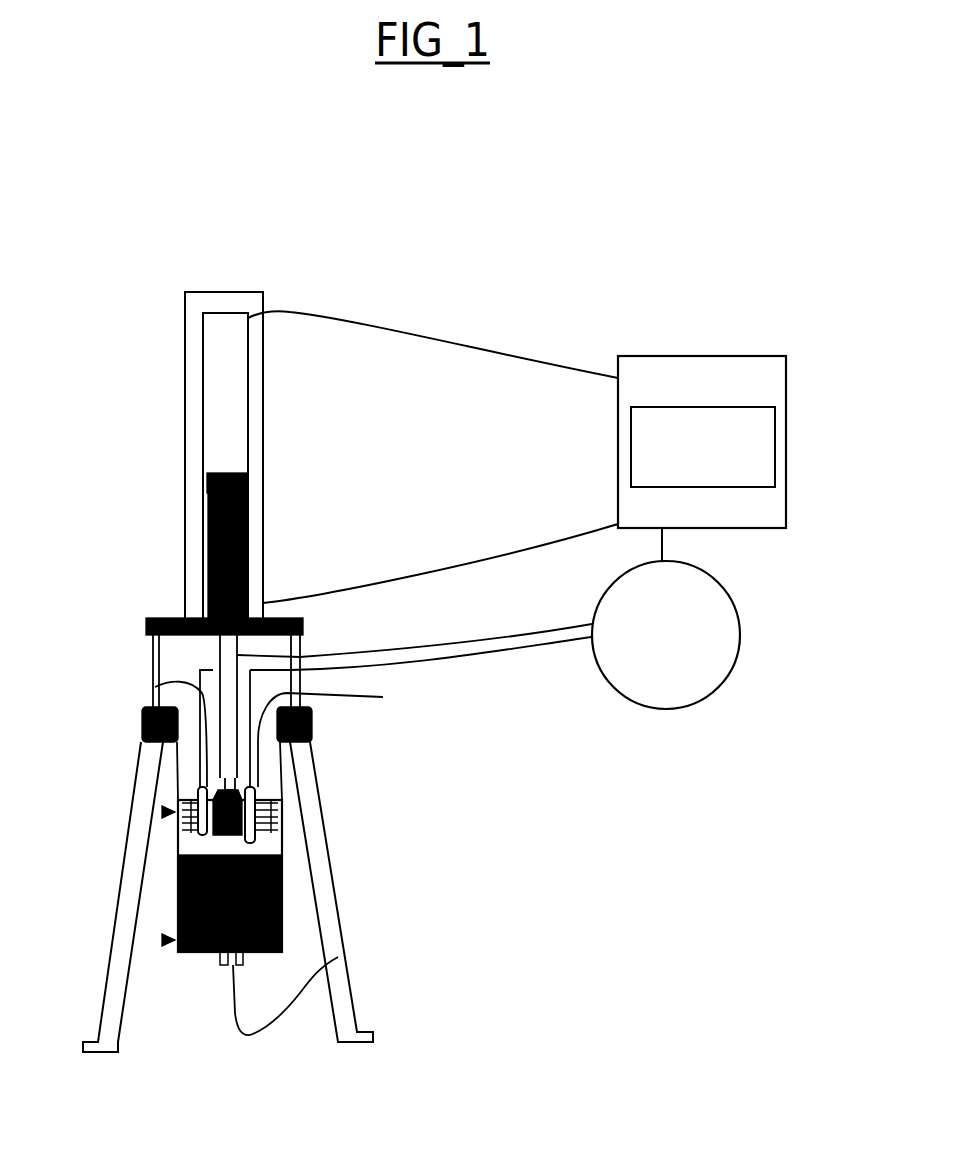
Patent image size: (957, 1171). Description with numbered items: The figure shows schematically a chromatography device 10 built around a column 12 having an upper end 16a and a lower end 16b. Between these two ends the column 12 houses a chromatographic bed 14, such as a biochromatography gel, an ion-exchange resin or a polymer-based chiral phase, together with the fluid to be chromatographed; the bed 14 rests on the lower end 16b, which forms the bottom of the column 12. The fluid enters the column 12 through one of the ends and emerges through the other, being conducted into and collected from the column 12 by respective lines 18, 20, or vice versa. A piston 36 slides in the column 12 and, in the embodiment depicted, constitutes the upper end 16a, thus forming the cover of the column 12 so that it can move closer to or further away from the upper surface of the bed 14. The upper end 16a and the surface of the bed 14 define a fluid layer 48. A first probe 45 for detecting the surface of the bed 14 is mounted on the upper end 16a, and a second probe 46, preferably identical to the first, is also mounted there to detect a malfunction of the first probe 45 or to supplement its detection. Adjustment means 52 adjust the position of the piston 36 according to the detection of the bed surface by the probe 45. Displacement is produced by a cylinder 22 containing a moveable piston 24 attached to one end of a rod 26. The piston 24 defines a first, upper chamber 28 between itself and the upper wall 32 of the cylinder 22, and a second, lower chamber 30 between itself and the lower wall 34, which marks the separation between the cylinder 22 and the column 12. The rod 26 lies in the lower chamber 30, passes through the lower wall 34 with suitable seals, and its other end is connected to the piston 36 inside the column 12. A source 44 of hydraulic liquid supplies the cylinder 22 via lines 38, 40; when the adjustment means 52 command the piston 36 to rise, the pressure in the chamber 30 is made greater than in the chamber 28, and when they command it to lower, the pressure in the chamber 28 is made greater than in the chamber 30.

The chromatography device 10 is at (467, 802).
The column 12 is at (282, 880).
The chromatographic bed 14 is at (178, 885).
The upper end 16a is at (160, 812).
The lower end 16b is at (162, 940).
The line 18 is at (383, 697).
The line 20 is at (413, 888).
The cylinder 22 is at (266, 258).
The moveable piston 24 is at (220, 473).
The rod 26 is at (237, 655).
The first chamber 28 is at (218, 347).
The second chamber 30 is at (208, 555).
The upper wall 32 is at (218, 292).
The lower wall 34 is at (157, 618).
The piston 36 is at (155, 687).
The line 38 is at (486, 350).
The line 40 is at (484, 557).
The source of hydraulic liquid 44 is at (733, 356).
The first probe 45 is at (257, 790).
The second probe 46 is at (197, 793).
The fluid layer 48 is at (178, 847).
The adjustment means 52 is at (488, 618).